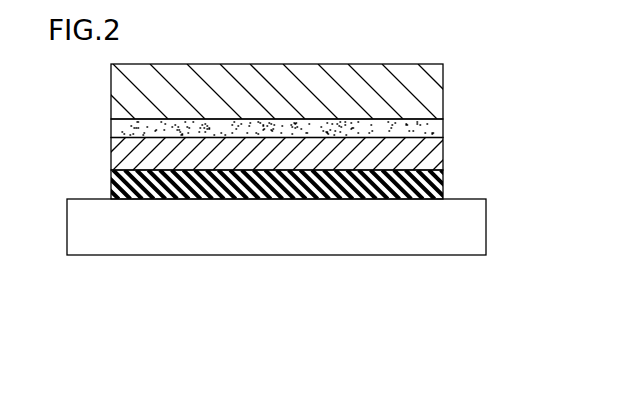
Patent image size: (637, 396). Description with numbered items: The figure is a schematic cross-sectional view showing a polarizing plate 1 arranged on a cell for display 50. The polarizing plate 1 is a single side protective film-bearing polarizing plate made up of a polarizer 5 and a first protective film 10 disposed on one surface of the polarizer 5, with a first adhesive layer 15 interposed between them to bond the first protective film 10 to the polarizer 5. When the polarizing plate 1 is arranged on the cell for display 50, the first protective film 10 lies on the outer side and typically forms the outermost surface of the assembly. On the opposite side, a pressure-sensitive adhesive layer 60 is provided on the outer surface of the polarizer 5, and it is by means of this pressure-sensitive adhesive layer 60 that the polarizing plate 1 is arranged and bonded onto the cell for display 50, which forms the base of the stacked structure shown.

The polarizing plate 1 is at (521, 87).
The polarizer 5 is at (430, 153).
The first protective film 10 is at (430, 100).
The first adhesive layer 15 is at (436, 131).
The cell for display 50 is at (468, 226).
The pressure-sensitive adhesive layer 60 is at (435, 184).